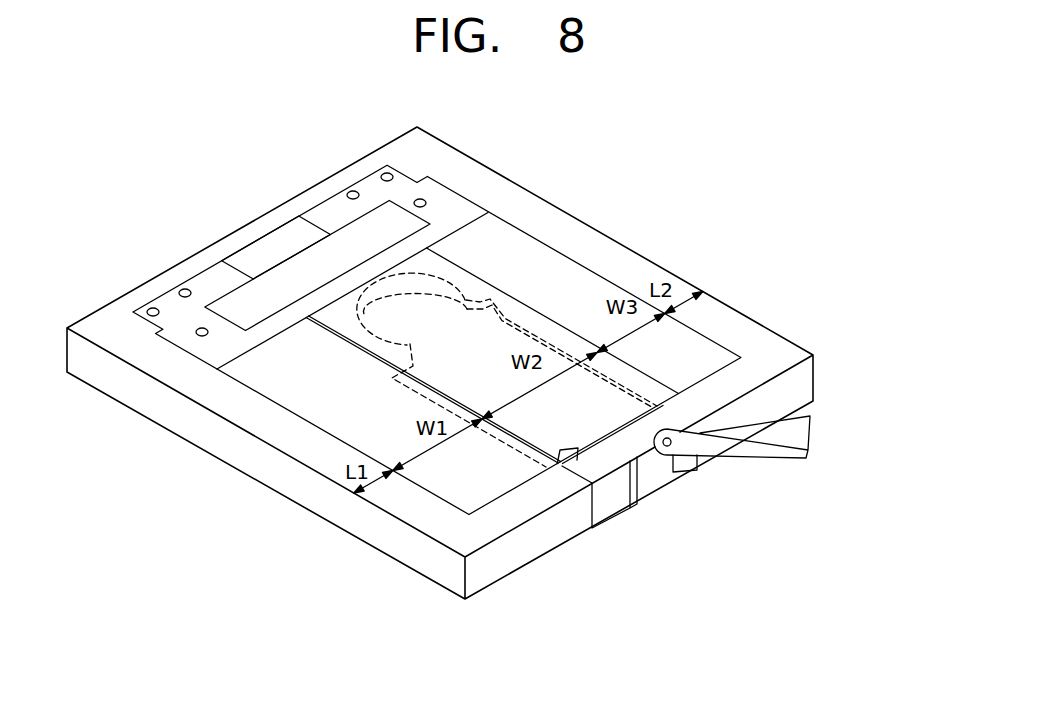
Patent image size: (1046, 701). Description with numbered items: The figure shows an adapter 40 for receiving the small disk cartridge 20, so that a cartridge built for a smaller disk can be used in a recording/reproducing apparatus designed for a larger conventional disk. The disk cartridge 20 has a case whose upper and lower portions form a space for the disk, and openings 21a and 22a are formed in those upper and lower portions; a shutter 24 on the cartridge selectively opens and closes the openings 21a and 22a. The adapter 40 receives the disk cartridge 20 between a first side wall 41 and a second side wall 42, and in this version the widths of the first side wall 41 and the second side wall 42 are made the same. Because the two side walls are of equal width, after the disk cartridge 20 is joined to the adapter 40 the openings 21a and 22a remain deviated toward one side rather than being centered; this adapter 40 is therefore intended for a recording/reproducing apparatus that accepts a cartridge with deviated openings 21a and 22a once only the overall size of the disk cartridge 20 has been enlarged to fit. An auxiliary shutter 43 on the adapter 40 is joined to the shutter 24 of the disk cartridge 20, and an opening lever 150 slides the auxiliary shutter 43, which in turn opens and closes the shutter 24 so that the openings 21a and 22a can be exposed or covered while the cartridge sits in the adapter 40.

The disk cartridge 20 is at (598, 290).
The opening 21a is at (505, 340).
The opening 22a is at (415, 303).
The shutter 24 is at (657, 373).
The adapter 40 is at (845, 357).
The first side wall 41 is at (458, 522).
The second side wall 42 is at (763, 348).
The auxiliary shutter 43 is at (677, 468).
The opening lever 150 is at (795, 445).